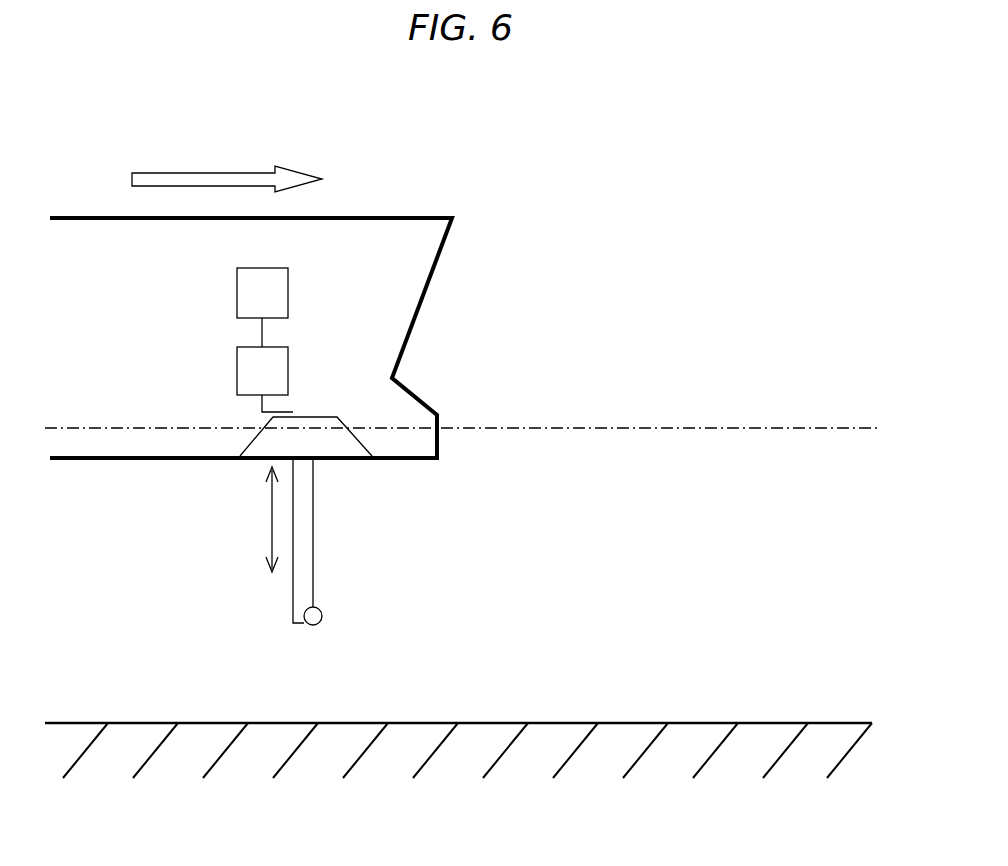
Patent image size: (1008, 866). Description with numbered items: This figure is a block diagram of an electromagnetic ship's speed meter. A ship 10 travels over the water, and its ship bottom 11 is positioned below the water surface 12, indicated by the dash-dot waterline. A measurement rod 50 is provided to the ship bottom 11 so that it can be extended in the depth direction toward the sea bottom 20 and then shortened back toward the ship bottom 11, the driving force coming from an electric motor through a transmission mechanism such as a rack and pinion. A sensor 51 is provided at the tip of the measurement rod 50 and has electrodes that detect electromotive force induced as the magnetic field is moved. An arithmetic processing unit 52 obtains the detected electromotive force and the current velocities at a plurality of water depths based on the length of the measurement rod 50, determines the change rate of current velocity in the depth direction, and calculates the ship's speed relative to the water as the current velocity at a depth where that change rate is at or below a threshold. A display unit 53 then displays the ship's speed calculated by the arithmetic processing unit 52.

The ship 10 is at (374, 216).
The ship bottom 11 is at (135, 462).
The water surface 12 is at (755, 425).
The sea bottom 20 is at (225, 720).
The measurement rod 50 is at (314, 553).
The sensor 51 is at (323, 616).
The arithmetic processing unit 52 is at (237, 365).
The display unit 53 is at (288, 290).